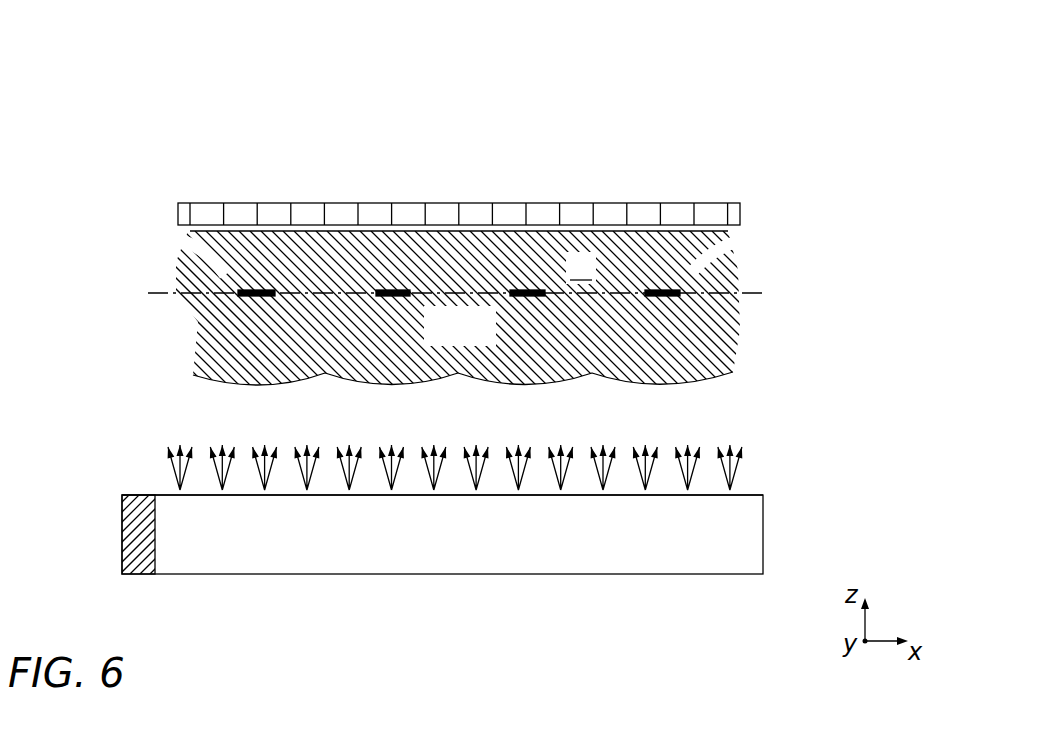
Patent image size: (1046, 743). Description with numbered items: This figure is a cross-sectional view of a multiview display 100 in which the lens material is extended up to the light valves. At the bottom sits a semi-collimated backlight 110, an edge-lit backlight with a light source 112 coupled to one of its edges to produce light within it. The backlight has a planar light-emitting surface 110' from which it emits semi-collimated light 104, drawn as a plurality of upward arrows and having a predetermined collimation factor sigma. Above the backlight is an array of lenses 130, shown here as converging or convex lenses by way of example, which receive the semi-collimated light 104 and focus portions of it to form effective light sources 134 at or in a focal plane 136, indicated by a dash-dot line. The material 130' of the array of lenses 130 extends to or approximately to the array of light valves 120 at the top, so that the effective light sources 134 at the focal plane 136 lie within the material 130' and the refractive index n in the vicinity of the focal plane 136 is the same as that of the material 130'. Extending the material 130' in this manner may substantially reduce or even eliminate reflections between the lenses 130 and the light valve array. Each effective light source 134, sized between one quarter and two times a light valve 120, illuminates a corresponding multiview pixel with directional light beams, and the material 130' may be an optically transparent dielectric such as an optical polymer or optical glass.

The multiview display 100 is at (797, 80).
The light valve 120 is at (160, 208).
The lens 130 is at (470, 313).
The material of the array of lenses 130' is at (461, 324).
The effective light source 134 is at (233, 285).
The focal plane 136 is at (158, 297).
The semi-collimated light 104 is at (763, 451).
The semi-collimated backlight 110 is at (493, 534).
The light-emitting surface 110' is at (486, 477).
The light source 112 is at (143, 575).